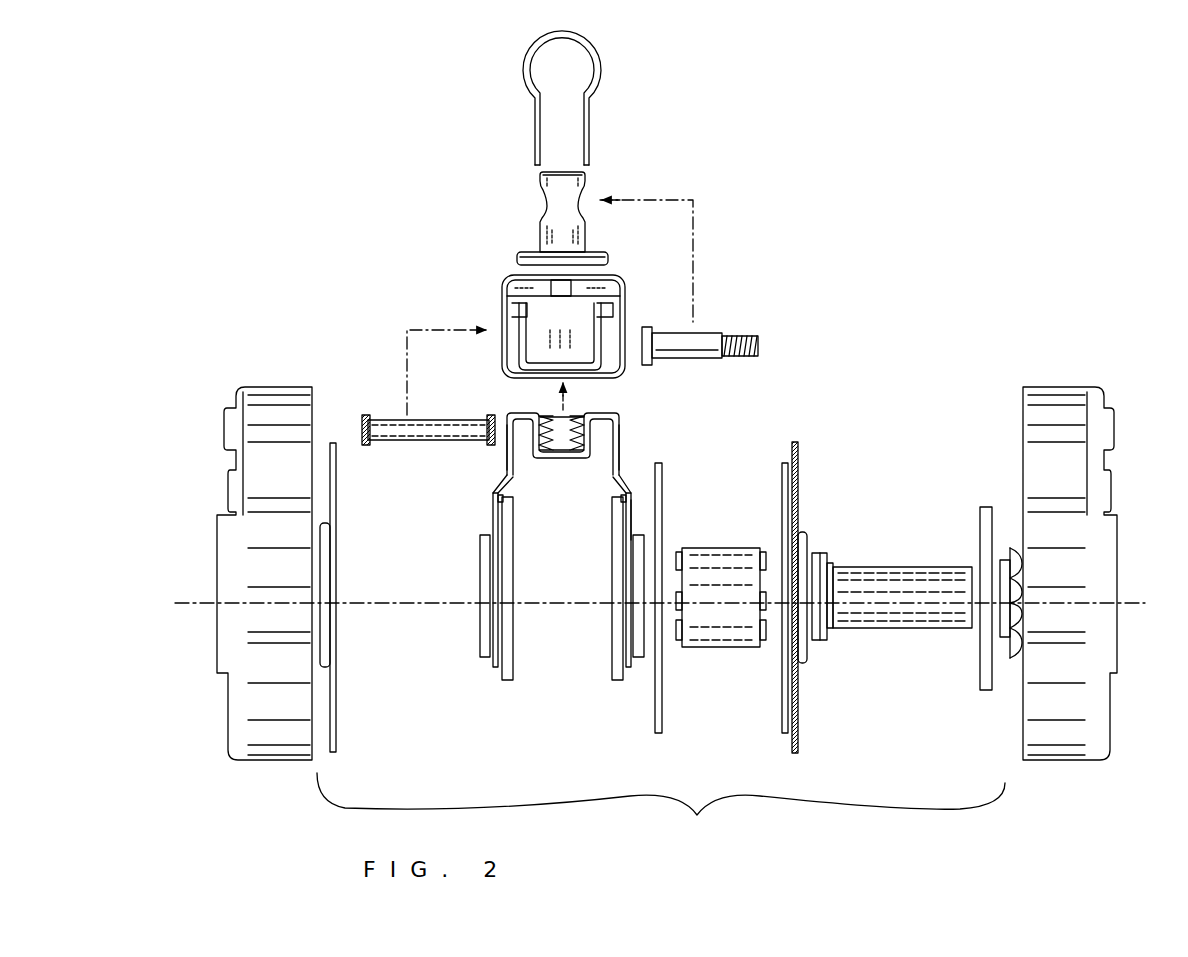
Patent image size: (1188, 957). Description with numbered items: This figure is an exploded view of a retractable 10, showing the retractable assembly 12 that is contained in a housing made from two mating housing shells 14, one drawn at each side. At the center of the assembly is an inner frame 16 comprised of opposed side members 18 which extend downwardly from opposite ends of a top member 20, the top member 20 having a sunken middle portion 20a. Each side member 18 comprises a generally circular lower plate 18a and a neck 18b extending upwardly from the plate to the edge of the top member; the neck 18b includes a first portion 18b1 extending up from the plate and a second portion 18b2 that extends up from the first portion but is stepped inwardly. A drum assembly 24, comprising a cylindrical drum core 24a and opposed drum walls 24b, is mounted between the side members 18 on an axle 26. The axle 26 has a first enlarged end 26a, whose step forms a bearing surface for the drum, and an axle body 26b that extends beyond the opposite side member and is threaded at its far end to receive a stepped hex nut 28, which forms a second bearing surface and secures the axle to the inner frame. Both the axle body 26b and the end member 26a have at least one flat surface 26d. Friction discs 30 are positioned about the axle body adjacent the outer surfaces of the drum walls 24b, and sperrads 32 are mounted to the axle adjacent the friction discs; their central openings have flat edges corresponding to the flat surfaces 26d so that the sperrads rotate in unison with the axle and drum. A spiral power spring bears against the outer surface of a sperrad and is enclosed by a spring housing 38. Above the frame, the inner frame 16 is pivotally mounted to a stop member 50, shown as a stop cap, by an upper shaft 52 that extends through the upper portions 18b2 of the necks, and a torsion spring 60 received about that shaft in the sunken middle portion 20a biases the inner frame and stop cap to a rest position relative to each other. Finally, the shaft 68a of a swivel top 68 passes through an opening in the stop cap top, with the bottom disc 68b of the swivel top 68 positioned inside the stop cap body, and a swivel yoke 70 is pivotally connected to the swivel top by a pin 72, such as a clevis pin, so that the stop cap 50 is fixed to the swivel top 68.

The retractable 10 is at (754, 191).
The retractable assembly 12 is at (697, 815).
The housing shell 14 is at (265, 387).
The inner frame 16 is at (602, 451).
The side member 18 is at (563, 572).
The lower plate 18a is at (488, 664).
The neck 18b is at (505, 451).
The first portion 18b1 is at (631, 527).
The second portion 18b2 is at (622, 455).
The top member 20 is at (607, 408).
The sunken middle portion 20a is at (563, 462).
The drum assembly 24 is at (720, 624).
The drum core 24a is at (708, 648).
The drum wall 24b is at (782, 713).
The axle 26 is at (892, 629).
The first enlarged end 26a is at (822, 642).
The axle body 26b is at (938, 629).
The flat surface 26d is at (886, 599).
The hex nut 28 is at (1007, 653).
The friction disc 30 is at (505, 682).
The sperrad 32 is at (323, 444).
The spring housing 38 is at (982, 507).
The stop member 50 is at (624, 289).
The upper shaft 52 is at (392, 443).
The torsion spring 60 is at (548, 413).
The swivel top 68 is at (565, 201).
The shaft 68a is at (587, 183).
The bottom disc 68b is at (604, 262).
The swivel yoke 70 is at (590, 119).
The pin 72 is at (709, 333).